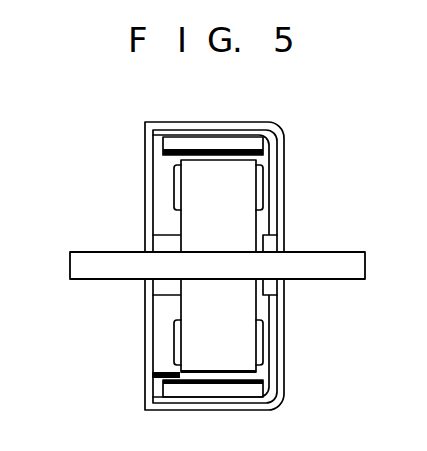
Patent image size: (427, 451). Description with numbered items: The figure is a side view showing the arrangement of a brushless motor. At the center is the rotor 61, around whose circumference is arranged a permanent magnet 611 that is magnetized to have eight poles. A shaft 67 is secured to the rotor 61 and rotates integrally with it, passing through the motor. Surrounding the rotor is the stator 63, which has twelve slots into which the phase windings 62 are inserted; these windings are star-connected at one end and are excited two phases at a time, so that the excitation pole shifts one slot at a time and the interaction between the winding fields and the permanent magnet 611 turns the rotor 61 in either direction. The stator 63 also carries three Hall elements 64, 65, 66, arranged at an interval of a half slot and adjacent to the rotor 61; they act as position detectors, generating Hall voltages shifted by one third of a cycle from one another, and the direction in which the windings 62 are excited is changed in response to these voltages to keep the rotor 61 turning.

The rotor 61 is at (277, 222).
The permanent magnet 611 is at (161, 389).
The phase windings 62 is at (174, 185).
The stator 63 is at (184, 222).
The Hall element 64 is at (106, 368).
The Hall element 65 is at (106, 368).
The Hall element 66 is at (163, 366).
The shaft 67 is at (346, 254).